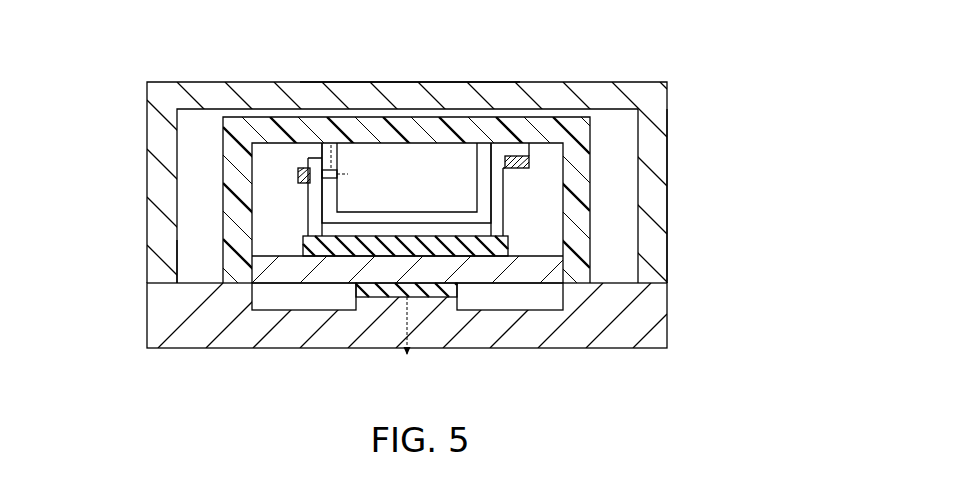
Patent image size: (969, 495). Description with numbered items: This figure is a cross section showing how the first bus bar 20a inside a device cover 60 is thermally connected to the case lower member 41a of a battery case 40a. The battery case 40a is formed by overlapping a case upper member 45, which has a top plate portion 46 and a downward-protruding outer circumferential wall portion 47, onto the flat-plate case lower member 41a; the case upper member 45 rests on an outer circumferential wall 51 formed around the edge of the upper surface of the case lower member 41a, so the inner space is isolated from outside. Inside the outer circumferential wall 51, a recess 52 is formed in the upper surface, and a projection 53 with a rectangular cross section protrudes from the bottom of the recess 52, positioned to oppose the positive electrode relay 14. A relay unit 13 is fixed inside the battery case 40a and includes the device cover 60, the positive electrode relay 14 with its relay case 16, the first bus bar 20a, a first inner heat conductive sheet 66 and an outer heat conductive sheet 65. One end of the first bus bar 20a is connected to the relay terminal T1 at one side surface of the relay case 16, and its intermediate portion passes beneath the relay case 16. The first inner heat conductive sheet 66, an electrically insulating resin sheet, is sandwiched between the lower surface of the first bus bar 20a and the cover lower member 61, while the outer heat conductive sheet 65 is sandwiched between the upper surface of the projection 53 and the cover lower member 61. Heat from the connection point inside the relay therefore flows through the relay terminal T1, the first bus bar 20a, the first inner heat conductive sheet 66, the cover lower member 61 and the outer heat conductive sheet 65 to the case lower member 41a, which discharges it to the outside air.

The relay unit 13 is at (600, 224).
The positive electrode relay 14 is at (452, 152).
The relay case 16 is at (388, 112).
The first bus bar 20a is at (535, 257).
The battery case 40a is at (452, 79).
The case lower member 41a is at (590, 328).
The case upper member 45 is at (667, 143).
The top plate portion 46 is at (350, 82).
The outer circumferential wall portion 47 is at (667, 190).
The outer circumferential wall 51 is at (208, 282).
The recess 52 is at (305, 298).
The projection 53 is at (388, 303).
The device cover 60 is at (592, 167).
The cover lower member 61 is at (495, 287).
The outer heat conductive sheet 65 is at (440, 300).
The first inner heat conductive sheet 66 is at (303, 243).
The relay terminal T1 is at (317, 199).